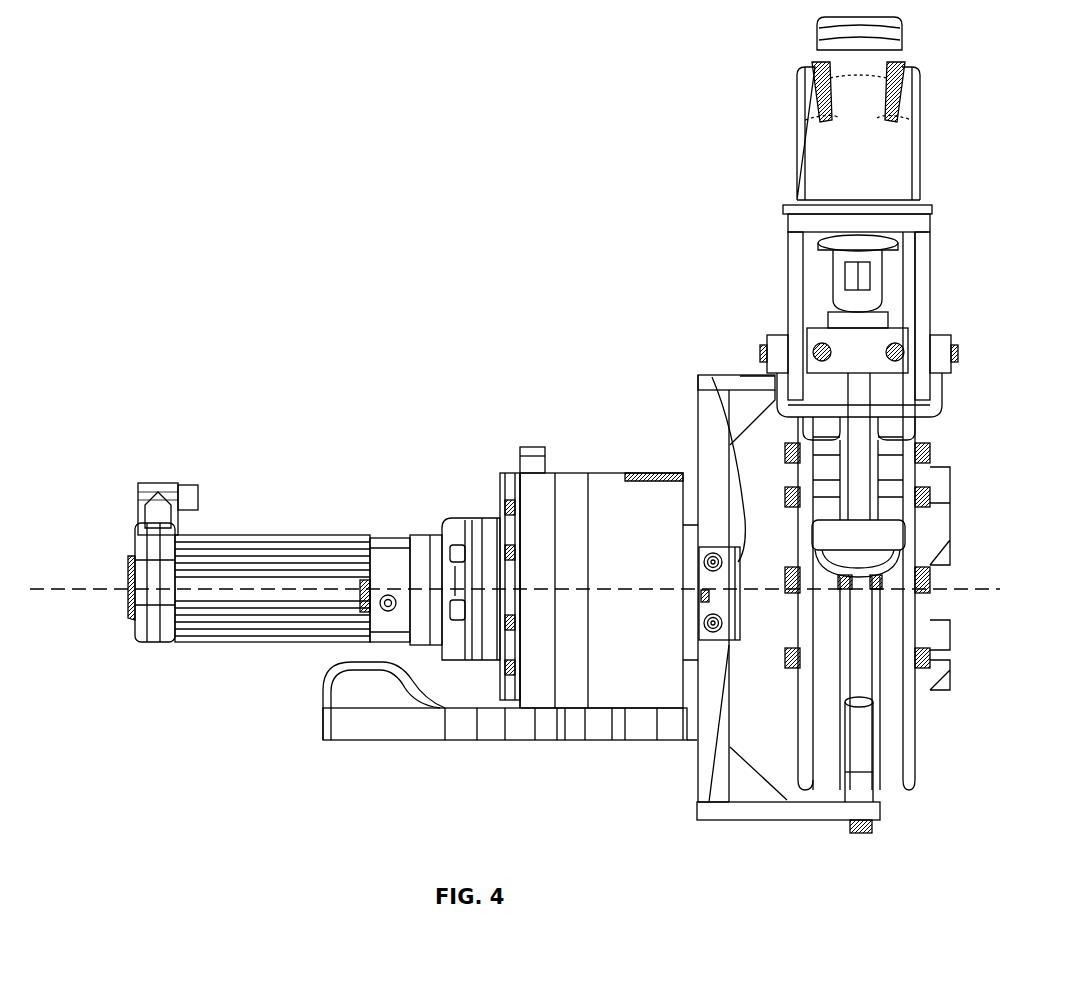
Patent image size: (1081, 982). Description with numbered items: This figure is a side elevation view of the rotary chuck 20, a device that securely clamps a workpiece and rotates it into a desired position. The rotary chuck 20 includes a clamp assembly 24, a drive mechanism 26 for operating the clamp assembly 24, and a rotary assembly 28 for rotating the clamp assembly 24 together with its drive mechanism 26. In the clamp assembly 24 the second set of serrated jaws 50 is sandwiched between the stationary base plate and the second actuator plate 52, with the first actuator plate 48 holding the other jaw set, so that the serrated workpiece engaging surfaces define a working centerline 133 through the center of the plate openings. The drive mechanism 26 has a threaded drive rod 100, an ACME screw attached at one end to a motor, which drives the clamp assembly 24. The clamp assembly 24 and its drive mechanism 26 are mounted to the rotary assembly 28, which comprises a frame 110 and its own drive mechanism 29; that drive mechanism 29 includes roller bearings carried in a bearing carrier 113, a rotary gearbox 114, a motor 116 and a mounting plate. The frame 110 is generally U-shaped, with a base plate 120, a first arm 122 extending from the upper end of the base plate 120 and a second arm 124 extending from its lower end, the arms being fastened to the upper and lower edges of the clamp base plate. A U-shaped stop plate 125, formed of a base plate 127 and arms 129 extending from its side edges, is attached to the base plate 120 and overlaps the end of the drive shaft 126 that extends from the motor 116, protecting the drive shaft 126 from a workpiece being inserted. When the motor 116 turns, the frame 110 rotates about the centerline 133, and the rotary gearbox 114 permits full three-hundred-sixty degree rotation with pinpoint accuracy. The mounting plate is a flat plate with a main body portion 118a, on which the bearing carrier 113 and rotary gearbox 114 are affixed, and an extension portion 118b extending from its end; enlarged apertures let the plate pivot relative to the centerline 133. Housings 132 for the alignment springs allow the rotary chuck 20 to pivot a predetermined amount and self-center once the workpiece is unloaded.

The rotary chuck 20 is at (647, 143).
The clamp assembly 24 is at (965, 475).
The drive mechanism 26 is at (960, 248).
The rotary assembly 28 is at (556, 325).
The drive mechanism 29 is at (413, 524).
The first actuator plate 48 is at (915, 747).
The second set of serrated jaws 50 is at (806, 738).
The second actuator plate 52 is at (858, 752).
The threaded drive rod 100 is at (862, 625).
The frame 110 is at (696, 420).
The bearing carrier 113 is at (605, 470).
The rotary gearbox 114 is at (557, 470).
The motor 116 is at (312, 535).
The main body portion 118a is at (562, 716).
The extension portion 118b is at (325, 670).
The base plate 120 is at (700, 745).
The first arm 122 is at (755, 375).
The second arm 124 is at (757, 810).
The stop plate 125 is at (697, 600).
The drive shaft 126 is at (690, 520).
The base plate 127 is at (726, 378).
The arms 129 is at (708, 803).
The housings 132 is at (373, 715).
The working centerline 133 is at (80, 585).